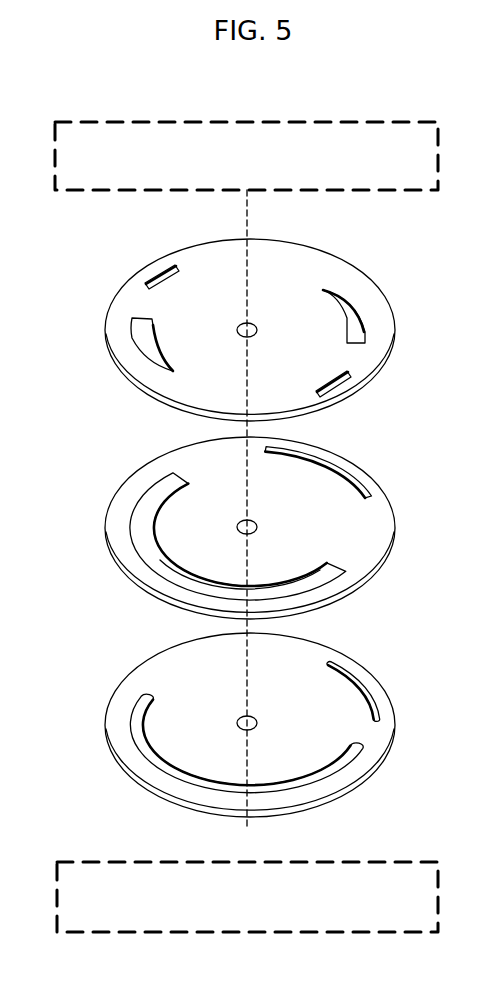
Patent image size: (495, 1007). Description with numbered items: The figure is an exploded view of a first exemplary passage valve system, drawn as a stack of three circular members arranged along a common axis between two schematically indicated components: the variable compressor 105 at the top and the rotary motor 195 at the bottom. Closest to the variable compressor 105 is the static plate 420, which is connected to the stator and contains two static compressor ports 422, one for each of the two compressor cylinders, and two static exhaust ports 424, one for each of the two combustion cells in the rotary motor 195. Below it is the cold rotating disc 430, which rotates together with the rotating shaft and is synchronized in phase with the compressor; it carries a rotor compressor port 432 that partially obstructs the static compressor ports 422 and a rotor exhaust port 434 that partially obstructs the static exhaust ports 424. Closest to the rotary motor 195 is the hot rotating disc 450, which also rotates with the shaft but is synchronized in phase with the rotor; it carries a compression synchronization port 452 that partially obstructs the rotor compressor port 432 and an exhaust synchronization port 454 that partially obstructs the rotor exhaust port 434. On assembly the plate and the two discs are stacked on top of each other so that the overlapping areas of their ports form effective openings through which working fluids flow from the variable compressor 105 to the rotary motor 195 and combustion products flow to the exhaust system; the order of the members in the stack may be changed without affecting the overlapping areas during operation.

The variable compressor 105 is at (227, 169).
The rotary motor 195 is at (228, 909).
The static plate 420 is at (193, 311).
The static compressor ports 422 is at (157, 267).
The static exhaust ports 424 is at (133, 337).
The cold rotating disc 430 is at (183, 514).
The rotor compressor port 432 is at (365, 493).
The rotor exhaust port 434 is at (157, 565).
The hot rotating disc 450 is at (183, 692).
The compression synchronization port 452 is at (370, 703).
The exhaust synchronization port 454 is at (147, 742).